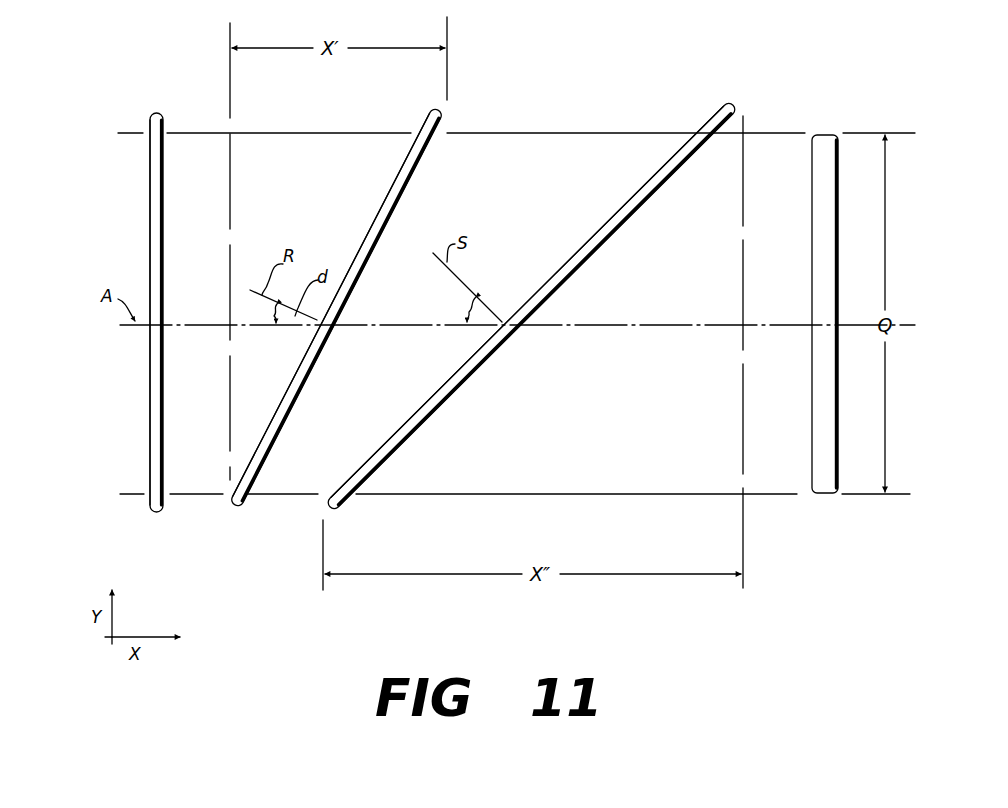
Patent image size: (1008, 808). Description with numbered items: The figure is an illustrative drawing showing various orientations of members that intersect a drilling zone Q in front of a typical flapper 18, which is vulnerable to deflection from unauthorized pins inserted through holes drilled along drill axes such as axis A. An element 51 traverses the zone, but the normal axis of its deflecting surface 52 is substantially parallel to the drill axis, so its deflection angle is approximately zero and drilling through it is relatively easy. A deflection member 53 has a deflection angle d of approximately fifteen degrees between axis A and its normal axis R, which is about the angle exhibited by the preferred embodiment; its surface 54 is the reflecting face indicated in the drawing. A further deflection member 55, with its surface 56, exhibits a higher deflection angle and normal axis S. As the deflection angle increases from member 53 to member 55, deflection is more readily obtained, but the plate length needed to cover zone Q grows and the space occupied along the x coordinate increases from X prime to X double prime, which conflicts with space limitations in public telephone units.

The flapper 18 is at (822, 150).
The element 51 is at (150, 513).
The deflecting surface 52 is at (147, 388).
The deflection member 53 is at (236, 511).
The reflecting surface of first mirror 54 is at (301, 357).
The deflection member 55 is at (323, 511).
The reflecting surface of second mirror 56 is at (426, 398).